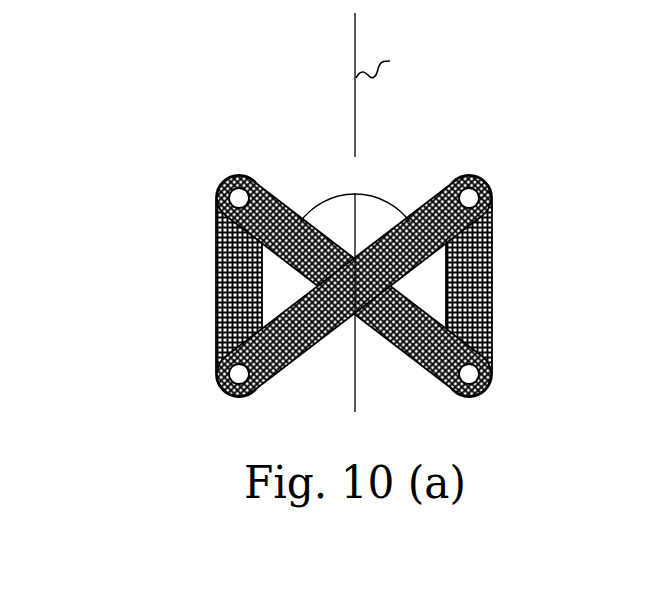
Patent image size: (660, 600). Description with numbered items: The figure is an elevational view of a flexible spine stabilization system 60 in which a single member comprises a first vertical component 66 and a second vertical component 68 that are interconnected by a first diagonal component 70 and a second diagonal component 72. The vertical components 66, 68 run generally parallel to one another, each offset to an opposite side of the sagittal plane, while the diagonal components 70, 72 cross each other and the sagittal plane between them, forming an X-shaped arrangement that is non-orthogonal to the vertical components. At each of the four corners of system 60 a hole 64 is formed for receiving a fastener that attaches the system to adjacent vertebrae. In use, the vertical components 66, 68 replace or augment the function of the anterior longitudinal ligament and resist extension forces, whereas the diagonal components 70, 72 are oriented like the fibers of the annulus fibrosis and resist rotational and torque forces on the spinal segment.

The spine stabilization system 60 is at (359, 228).
The hole 64 is at (240, 198).
The first vertical component 66 is at (218, 283).
The second vertical component 68 is at (493, 300).
The first diagonal component 70 is at (405, 358).
The second diagonal component 72 is at (447, 186).